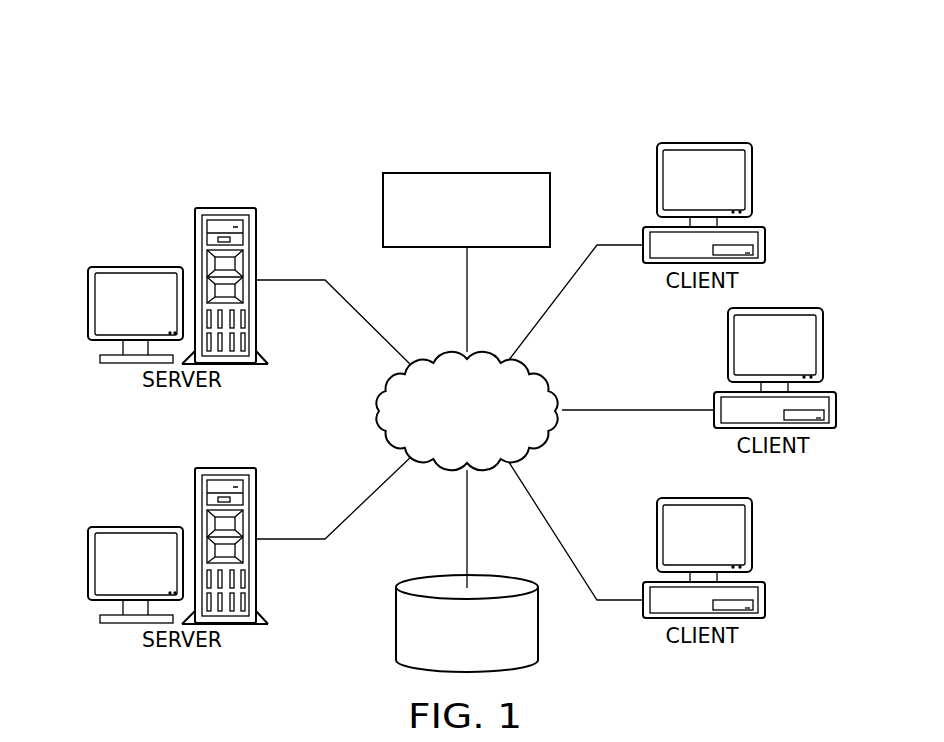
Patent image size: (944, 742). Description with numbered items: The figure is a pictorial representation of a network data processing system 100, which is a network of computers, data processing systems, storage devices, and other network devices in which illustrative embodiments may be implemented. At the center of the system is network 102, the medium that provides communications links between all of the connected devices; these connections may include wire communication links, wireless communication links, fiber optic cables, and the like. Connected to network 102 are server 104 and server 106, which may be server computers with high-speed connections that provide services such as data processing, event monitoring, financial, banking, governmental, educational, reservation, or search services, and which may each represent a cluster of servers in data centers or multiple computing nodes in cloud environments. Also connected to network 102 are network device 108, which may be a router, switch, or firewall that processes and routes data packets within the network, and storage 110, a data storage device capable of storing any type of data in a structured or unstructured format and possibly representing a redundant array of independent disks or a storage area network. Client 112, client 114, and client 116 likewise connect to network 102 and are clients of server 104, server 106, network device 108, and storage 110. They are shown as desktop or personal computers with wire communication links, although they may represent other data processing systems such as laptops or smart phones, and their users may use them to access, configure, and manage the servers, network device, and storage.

The network data processing system 100 is at (225, 69).
The network 102 is at (442, 358).
The server 104 is at (88, 303).
The server 106 is at (88, 565).
The network device 108 is at (455, 173).
The storage 110 is at (395, 622).
The client 112 is at (765, 236).
The client 114 is at (837, 418).
The client 116 is at (765, 607).